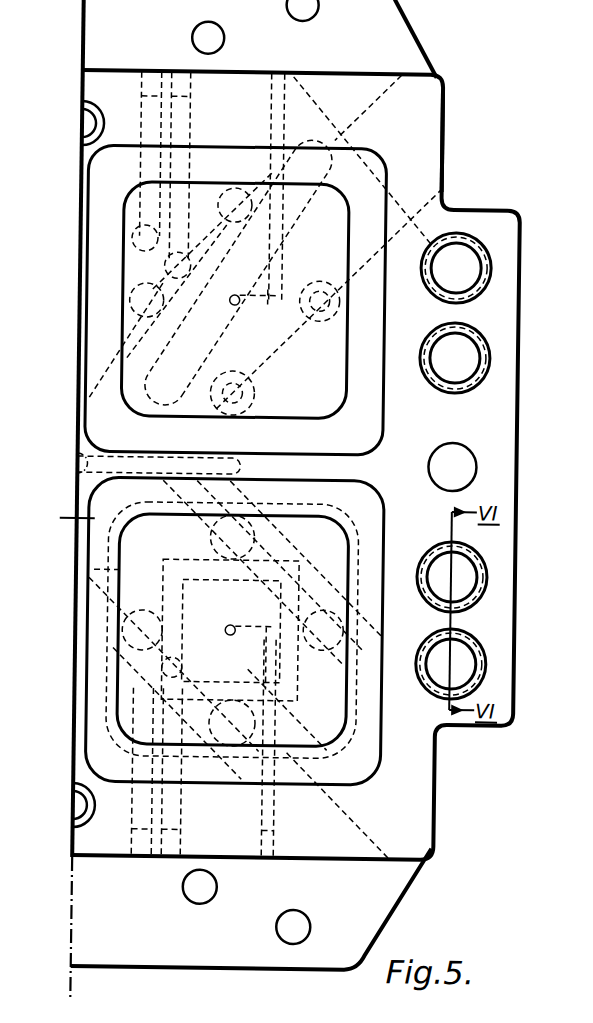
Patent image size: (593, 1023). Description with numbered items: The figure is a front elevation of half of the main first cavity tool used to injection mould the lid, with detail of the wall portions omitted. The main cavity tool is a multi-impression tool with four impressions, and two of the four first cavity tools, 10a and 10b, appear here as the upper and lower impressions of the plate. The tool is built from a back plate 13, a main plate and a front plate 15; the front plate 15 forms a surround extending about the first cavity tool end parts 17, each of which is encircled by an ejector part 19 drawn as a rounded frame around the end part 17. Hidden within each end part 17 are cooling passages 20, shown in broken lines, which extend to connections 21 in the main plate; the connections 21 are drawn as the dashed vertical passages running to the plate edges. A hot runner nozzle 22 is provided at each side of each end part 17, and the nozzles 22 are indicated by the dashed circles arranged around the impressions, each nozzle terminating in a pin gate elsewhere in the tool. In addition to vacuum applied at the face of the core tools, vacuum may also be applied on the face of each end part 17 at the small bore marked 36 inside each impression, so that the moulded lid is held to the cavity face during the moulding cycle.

The back plate 13 is at (397, 32).
The front plate 15 is at (426, 102).
The first cavity tool end part 17 is at (121, 267).
The ejector part 19 is at (351, 168).
The cooling passage 20 is at (176, 326).
The connection 21 is at (144, 90).
The hot runner nozzle 22 is at (117, 314).
The vacuum 36 is at (231, 298).
The first cavity tool 10a is at (200, 364).
The first cavity tool 10b is at (220, 681).